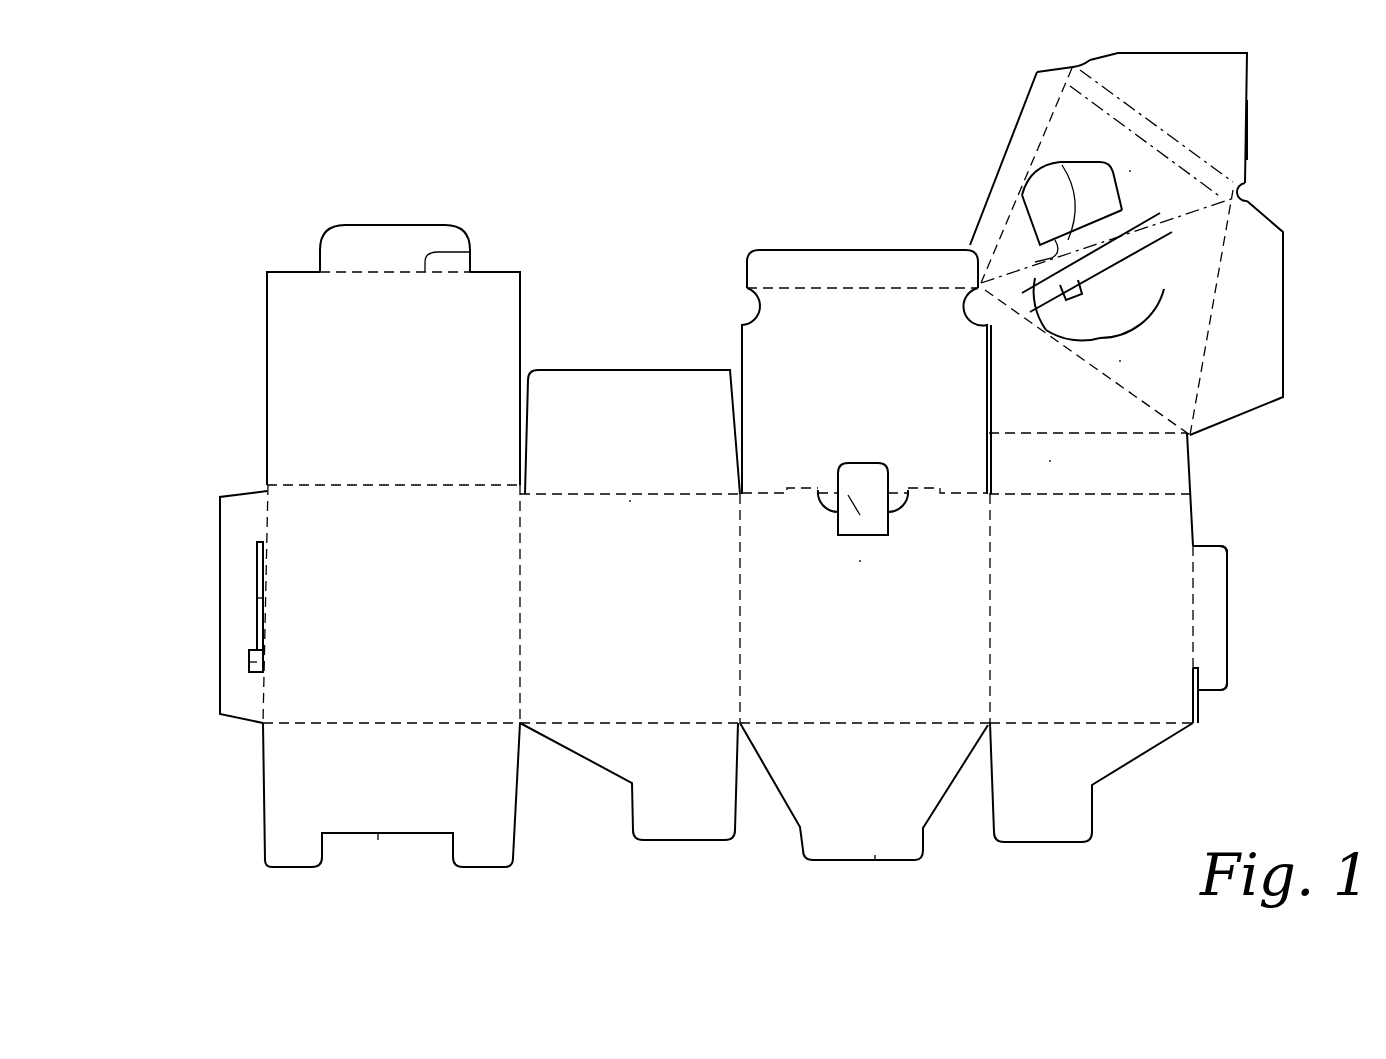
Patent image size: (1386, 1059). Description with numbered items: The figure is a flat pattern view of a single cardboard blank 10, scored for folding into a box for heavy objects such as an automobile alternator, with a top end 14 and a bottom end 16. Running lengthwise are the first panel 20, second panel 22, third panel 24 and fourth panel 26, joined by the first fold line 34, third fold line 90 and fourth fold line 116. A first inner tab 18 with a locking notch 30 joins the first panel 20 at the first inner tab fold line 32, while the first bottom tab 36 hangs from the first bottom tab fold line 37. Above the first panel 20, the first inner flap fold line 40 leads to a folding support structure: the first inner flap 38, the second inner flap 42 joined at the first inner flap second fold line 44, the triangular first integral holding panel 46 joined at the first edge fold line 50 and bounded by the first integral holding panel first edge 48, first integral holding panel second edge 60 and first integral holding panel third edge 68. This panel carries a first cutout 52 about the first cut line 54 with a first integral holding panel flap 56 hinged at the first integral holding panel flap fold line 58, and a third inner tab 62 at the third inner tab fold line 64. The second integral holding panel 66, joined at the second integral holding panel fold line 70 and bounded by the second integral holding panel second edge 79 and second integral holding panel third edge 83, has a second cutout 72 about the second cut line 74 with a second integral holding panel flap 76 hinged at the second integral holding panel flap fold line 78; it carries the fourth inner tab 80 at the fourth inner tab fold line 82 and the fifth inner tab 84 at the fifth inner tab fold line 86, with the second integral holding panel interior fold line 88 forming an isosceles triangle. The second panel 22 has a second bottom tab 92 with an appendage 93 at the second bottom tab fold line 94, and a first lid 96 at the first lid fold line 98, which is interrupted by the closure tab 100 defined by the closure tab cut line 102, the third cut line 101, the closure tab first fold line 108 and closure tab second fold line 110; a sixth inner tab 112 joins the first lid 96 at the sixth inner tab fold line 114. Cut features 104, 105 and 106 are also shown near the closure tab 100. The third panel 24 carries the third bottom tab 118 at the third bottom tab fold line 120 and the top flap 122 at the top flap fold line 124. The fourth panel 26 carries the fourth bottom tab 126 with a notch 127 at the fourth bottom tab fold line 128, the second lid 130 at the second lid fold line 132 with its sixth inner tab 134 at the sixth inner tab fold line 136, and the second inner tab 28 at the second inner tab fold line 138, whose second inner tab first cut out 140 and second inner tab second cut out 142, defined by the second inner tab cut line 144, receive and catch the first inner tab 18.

The cardboard blank 10 is at (291, 152).
The top end 14 is at (270, 207).
The bottom end 16 is at (268, 895).
The first inner tab 18 is at (1215, 625).
The first panel 20 is at (1114, 622).
The second panel 22 is at (876, 622).
The third panel 24 is at (646, 622).
The fourth panel 26 is at (401, 622).
The second inner tab 28 is at (230, 552).
The locking notch 30 is at (1202, 692).
The first inner tab fold line 32 is at (1195, 595).
The first fold line 34 is at (990, 613).
The first bottom tab 36 is at (1054, 794).
The first bottom tab fold line 37 is at (1065, 722).
The first inner flap 38 is at (1102, 474).
The first inner flap fold line 40 is at (1090, 496).
The second inner flap 42 is at (1049, 391).
The first inner flap second fold line 44 is at (1113, 435).
The first integral holding panel 46 is at (1174, 376).
The first integral holding panel first edge 48 is at (1050, 333).
The first edge fold line 50 is at (1125, 402).
The first cutout 52 is at (1155, 290).
The first cut line 54 is at (1150, 305).
The first integral holding panel flap 56 is at (1078, 297).
The first integral holding panel flap fold line 58 is at (1165, 240).
The first integral holding panel second edge 60 is at (1237, 289).
The third inner tab 62 is at (1264, 356).
The third inner tab fold line 64 is at (1210, 402).
The second integral holding panel 66 is at (1149, 189).
The first integral holding panel third edge 68 is at (1157, 216).
The second integral holding panel fold line 70 is at (1243, 195).
The second cutout 72 is at (1112, 182).
The second cut line 74 is at (1080, 165).
The second integral holding panel flap 76 is at (1118, 209).
The second integral holding panel flap fold line 78 is at (1060, 247).
The second integral holding panel second edge 79 is at (1040, 104).
The fourth inner tab 80 is at (1020, 150).
The fourth inner tab fold line 82 is at (985, 215).
The second integral holding panel third edge 83 is at (1195, 150).
The fifth inner tab 84 is at (1206, 104).
The fifth inner tab fold line 86 is at (1170, 115).
The second integral holding panel interior fold line 88 is at (1158, 108).
The third fold line 90 is at (742, 620).
The second bottom tab 92 is at (872, 794).
The appendage 93 is at (875, 860).
The second bottom tab fold line 94 is at (857, 722).
The first lid 96 is at (876, 389).
The first lid fold line 98 is at (767, 492).
The closure tab 100 is at (873, 482).
The third cut line 101 is at (818, 488).
The closure tab cut line 102 is at (858, 463).
The cut line 104 is at (942, 500).
The fold line 105 is at (835, 500).
The arcuate cut 106 is at (890, 518).
The closure tab first fold line 108 is at (858, 537).
The closure tab second fold line 110 is at (840, 520).
The sixth inner tab 112 is at (830, 265).
The sixth inner tab fold line 114 is at (888, 288).
The fourth fold line 116 is at (525, 612).
The third bottom tab 118 is at (700, 794).
The third bottom tab fold line 120 is at (630, 722).
The top flap 122 is at (652, 439).
The top flap fold line 124 is at (600, 496).
The fourth bottom tab 126 is at (405, 794).
The notch 127 is at (378, 835).
The fourth bottom tab fold line 128 is at (366, 722).
The second lid 130 is at (415, 389).
The second lid fold line 132 is at (400, 486).
The sixth inner tab 134 is at (400, 235).
The sixth inner tab fold line 136 is at (432, 262).
The second inner tab fold line 138 is at (264, 612).
The second inner tab first cut out 140 is at (257, 598).
The second inner tab second cut out 142 is at (248, 663).
The second inner tab cut line 144 is at (264, 664).